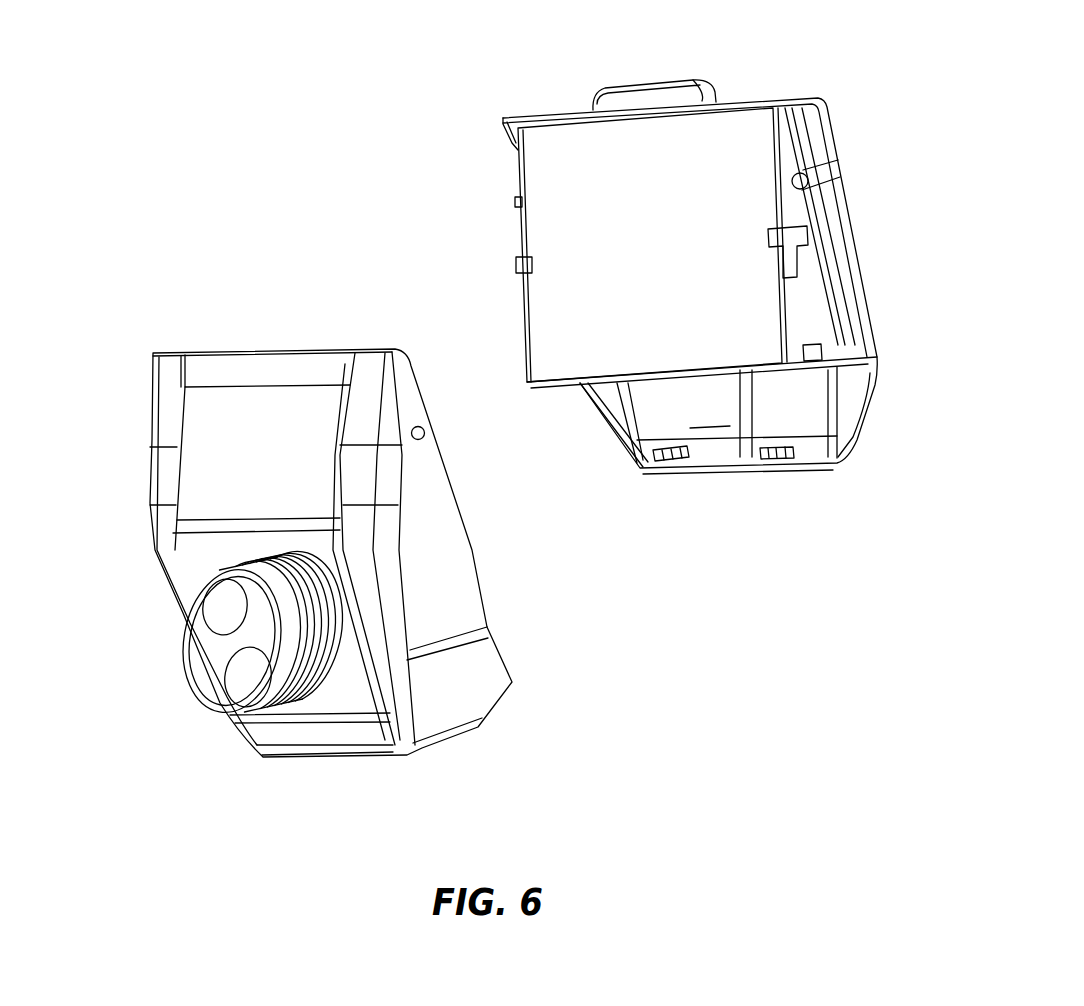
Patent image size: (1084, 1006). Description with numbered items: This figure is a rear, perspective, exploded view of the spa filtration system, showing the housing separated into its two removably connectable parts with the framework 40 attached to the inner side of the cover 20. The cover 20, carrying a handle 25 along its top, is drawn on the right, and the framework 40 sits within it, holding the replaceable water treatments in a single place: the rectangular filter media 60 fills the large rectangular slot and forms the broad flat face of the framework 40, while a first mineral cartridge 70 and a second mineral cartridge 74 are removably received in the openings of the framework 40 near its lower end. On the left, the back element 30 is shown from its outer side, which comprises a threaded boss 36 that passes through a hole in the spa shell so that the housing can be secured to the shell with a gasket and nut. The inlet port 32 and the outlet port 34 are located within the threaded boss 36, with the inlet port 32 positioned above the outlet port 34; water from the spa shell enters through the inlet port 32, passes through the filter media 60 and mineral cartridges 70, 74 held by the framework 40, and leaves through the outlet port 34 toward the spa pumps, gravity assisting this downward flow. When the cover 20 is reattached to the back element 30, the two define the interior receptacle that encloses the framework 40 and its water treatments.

The cover 20 is at (855, 315).
The handle 25 is at (668, 93).
The back element 30 is at (462, 706).
The inlet port 32 is at (225, 608).
The outlet port 34 is at (262, 676).
The threaded boss 36 is at (195, 663).
The framework 40 is at (812, 278).
The rectangular filter media 60 is at (530, 160).
The first mineral cartridge 70 is at (818, 445).
The second mineral cartridge 74 is at (663, 447).